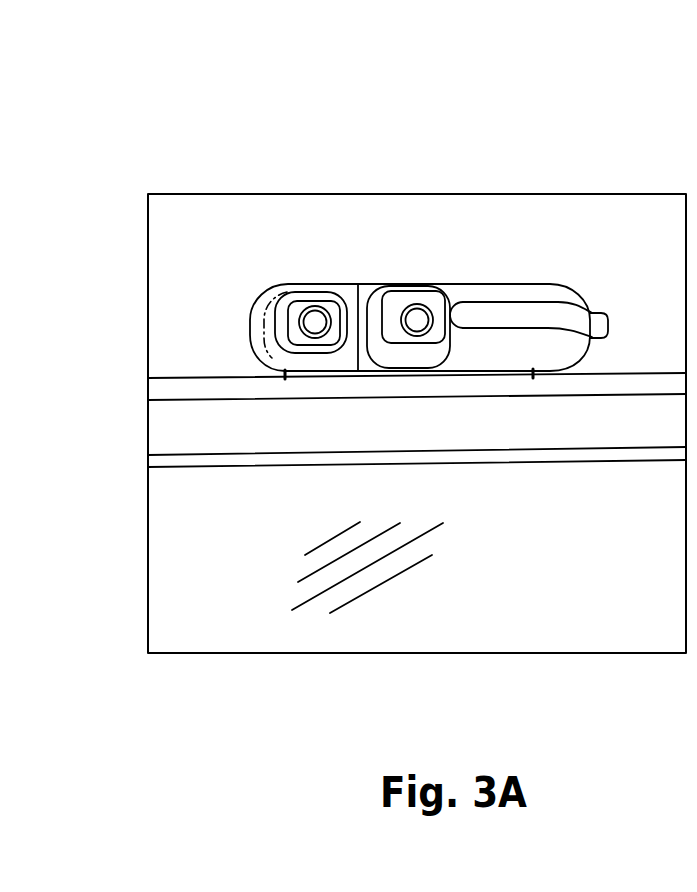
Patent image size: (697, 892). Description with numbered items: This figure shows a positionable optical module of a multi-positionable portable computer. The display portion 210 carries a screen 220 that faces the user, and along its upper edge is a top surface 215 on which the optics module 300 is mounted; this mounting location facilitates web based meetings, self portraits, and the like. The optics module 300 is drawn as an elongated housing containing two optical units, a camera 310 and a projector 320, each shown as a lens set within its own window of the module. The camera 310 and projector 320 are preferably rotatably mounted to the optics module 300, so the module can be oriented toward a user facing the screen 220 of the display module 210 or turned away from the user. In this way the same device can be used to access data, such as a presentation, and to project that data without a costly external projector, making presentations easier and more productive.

The display portion 210 is at (88, 146).
The top surface 215 is at (163, 428).
The screen 220 is at (240, 618).
The optics module 300 is at (250, 326).
The camera 310 is at (346, 306).
The projector 320 is at (446, 306).